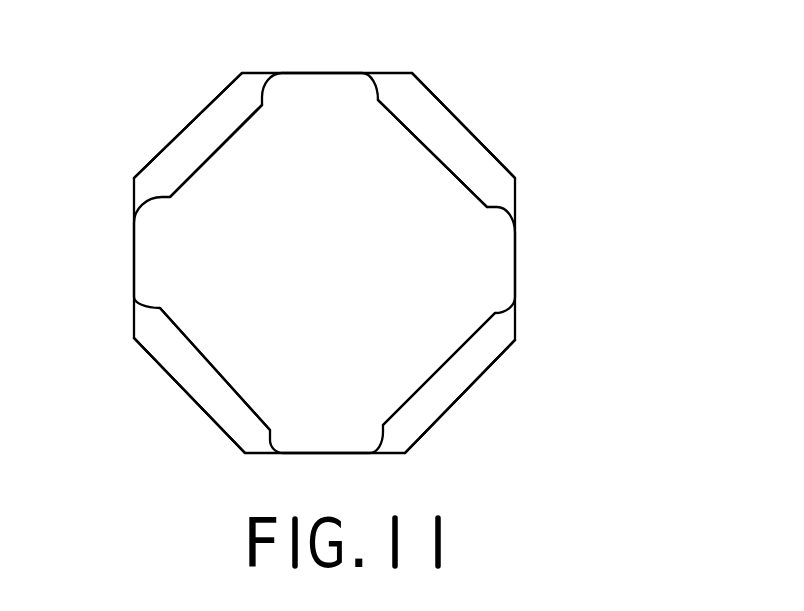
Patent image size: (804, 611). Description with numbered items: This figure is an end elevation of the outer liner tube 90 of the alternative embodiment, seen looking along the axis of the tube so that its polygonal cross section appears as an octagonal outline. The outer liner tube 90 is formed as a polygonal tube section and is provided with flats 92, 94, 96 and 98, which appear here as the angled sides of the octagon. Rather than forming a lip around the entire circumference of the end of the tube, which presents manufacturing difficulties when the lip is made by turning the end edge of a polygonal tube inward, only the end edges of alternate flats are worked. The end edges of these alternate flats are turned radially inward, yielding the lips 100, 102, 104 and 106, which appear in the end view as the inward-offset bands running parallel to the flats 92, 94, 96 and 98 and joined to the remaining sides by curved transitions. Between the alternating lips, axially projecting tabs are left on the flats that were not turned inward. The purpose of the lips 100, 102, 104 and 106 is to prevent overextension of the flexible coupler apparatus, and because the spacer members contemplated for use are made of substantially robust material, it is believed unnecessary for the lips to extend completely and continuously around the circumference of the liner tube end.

The outer liner tube 90 is at (636, 168).
The flat 92 is at (191, 405).
The flat 94 is at (448, 425).
The flat 96 is at (458, 120).
The flat 98 is at (192, 122).
The lip 100 is at (185, 355).
The lip 102 is at (470, 355).
The lip 104 is at (475, 172).
The lip 106 is at (171, 160).